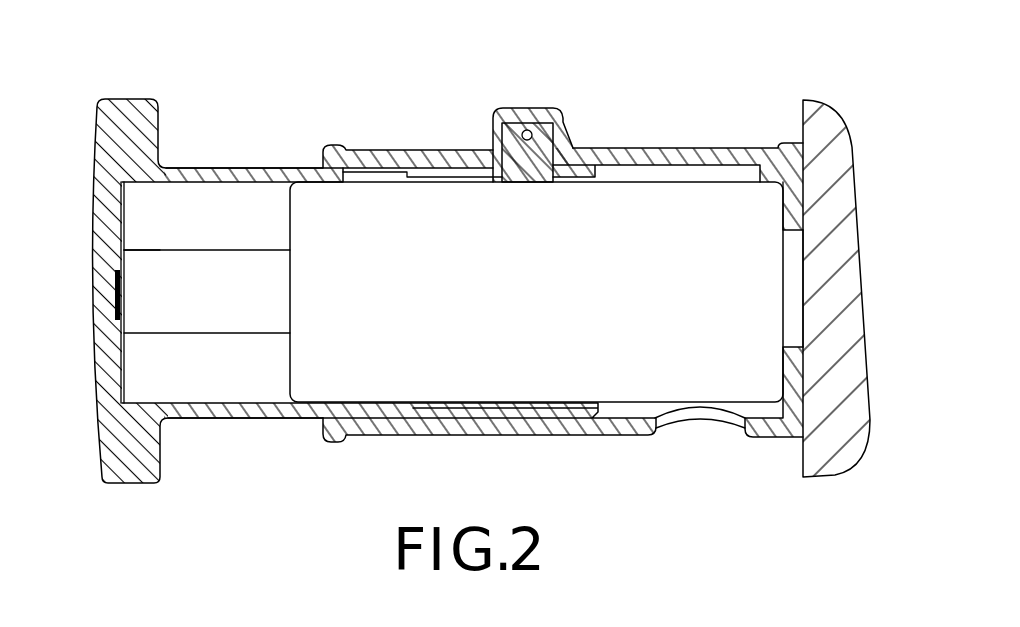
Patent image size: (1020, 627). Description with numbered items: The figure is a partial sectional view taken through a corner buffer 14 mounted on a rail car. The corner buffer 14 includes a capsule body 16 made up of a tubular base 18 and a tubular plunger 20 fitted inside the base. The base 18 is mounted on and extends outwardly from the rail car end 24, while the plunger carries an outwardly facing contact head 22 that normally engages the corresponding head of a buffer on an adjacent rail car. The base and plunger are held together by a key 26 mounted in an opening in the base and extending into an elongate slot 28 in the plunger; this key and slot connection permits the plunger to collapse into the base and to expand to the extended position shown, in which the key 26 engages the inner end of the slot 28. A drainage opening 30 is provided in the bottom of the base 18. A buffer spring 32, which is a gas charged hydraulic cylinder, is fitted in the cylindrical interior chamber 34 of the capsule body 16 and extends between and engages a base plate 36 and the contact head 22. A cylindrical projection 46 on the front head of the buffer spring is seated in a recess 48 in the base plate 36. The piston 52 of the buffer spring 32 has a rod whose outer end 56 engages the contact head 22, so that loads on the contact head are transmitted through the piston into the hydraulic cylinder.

The corner buffer 14 is at (270, 98).
The capsule body 16 is at (136, 492).
The tubular base 18 is at (598, 148).
The tubular plunger 20 is at (218, 420).
The contact head 22 is at (90, 304).
The rail car end 24 is at (825, 108).
The key 26 is at (520, 108).
The elongate slot 28 is at (345, 180).
The drainage opening 30 is at (670, 423).
The buffer spring 32 is at (284, 365).
The cylindrical interior chamber 34 is at (245, 183).
The base plate 36 is at (803, 195).
The cylindrical projection 46 is at (795, 285).
The recess 48 is at (797, 345).
The piston 52 is at (232, 302).
The outer end 56 is at (137, 263).